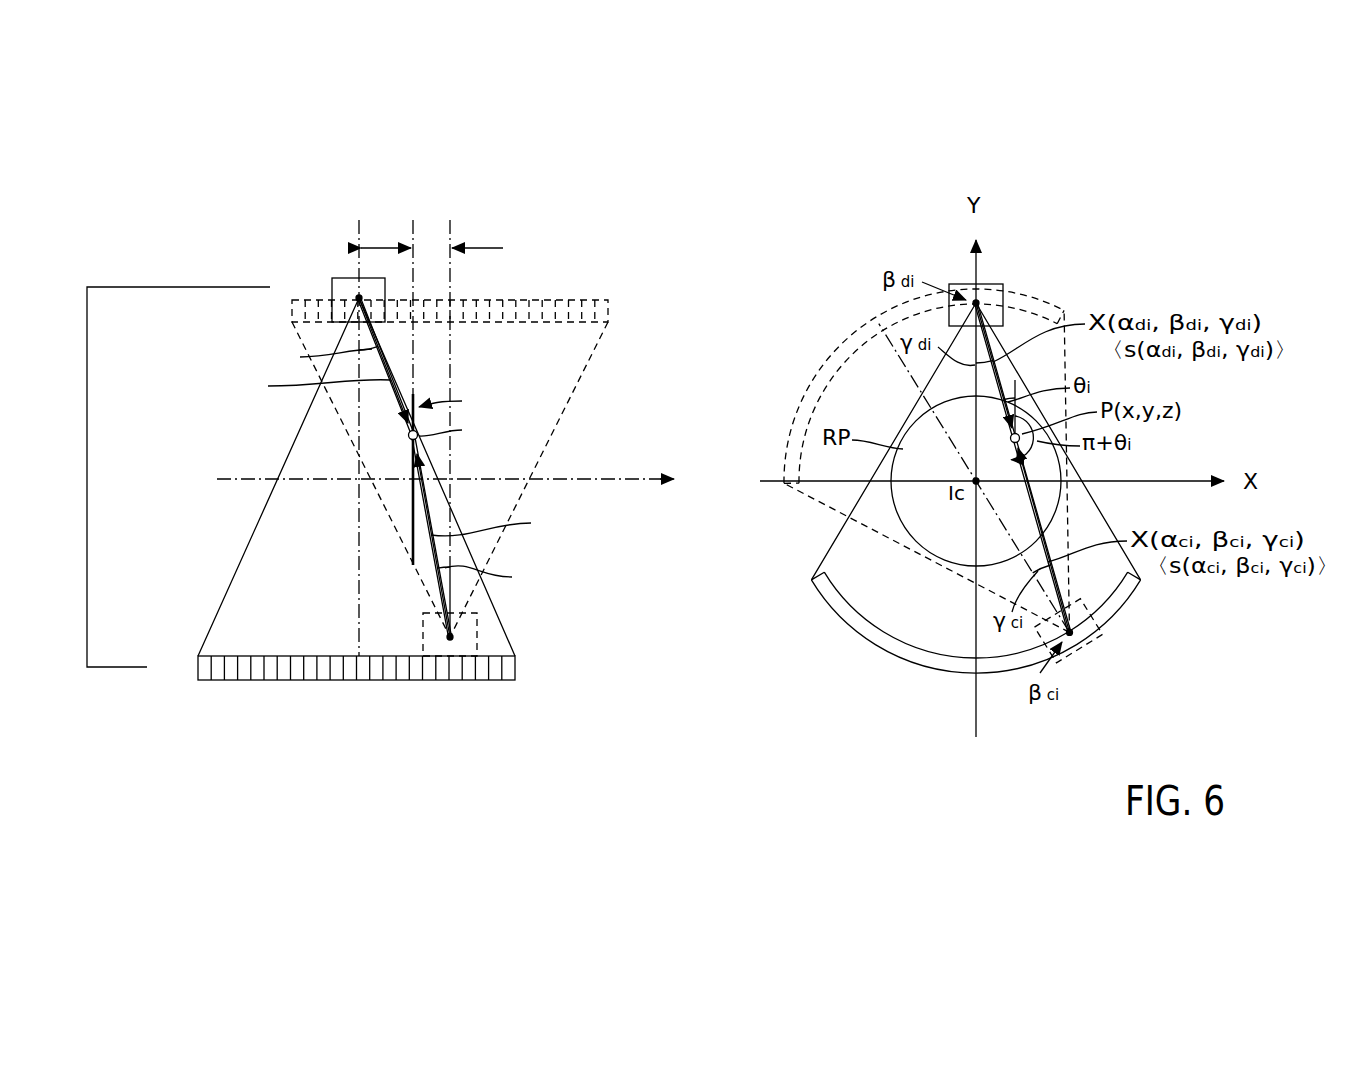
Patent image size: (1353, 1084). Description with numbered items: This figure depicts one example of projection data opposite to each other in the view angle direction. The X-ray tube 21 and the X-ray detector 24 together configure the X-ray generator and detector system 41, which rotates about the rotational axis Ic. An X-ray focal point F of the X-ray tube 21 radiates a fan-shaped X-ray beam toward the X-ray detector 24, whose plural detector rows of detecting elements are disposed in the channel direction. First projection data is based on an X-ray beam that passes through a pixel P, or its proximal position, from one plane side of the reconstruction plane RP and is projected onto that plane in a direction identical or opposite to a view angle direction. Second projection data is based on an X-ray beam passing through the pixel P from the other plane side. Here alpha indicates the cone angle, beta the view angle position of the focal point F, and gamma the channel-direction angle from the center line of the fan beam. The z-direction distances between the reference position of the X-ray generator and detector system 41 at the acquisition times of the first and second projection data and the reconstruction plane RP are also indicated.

The X-ray tube 21 is at (332, 283).
The X-ray detector 24 is at (611, 312).
The X-ray generator and detector system 41 is at (87, 464).